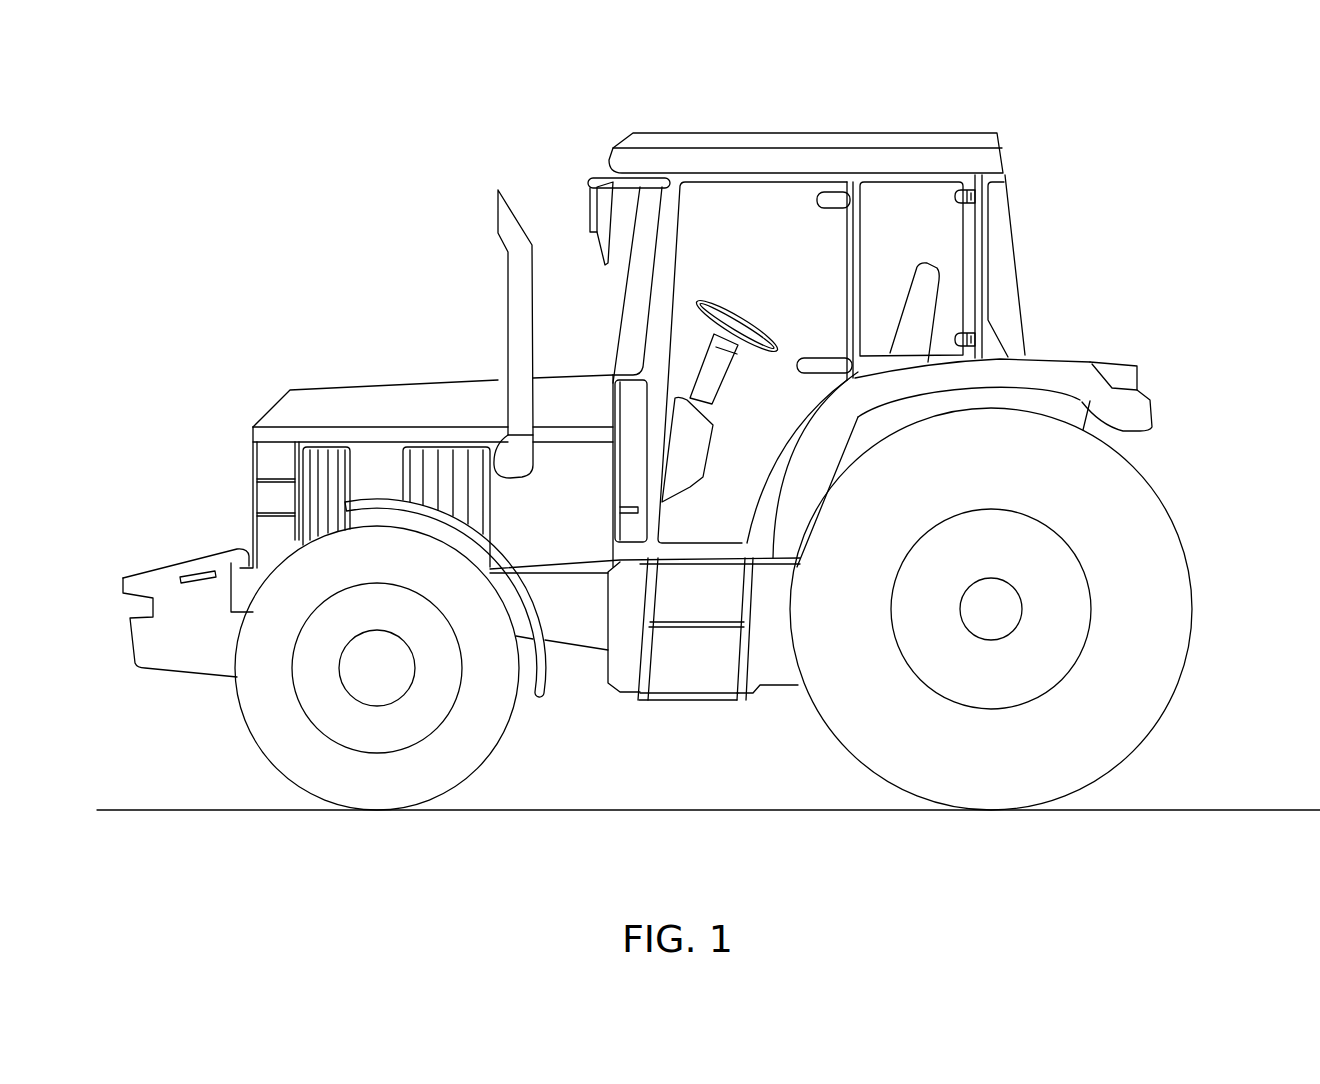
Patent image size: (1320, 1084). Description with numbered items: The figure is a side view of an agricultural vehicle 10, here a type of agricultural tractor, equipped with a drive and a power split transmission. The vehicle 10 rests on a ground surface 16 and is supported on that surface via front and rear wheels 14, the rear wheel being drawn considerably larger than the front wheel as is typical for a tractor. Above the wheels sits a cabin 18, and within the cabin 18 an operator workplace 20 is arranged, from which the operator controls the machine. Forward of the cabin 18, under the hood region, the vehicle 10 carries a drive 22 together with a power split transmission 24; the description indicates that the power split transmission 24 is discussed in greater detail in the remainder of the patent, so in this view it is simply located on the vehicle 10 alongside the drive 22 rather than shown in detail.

The agricultural vehicle 10 is at (548, 152).
The front and rear wheels 14 is at (267, 763).
The ground surface 16 is at (583, 813).
The cabin 18 is at (647, 132).
The operator workplace 20 is at (762, 230).
The drive 22 is at (375, 467).
The power split transmission 24 is at (545, 500).